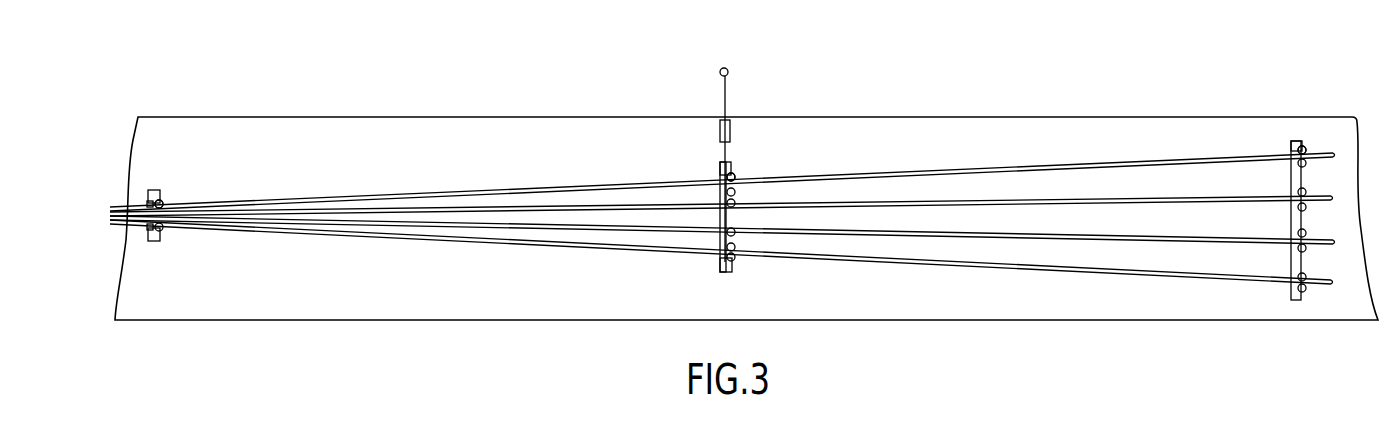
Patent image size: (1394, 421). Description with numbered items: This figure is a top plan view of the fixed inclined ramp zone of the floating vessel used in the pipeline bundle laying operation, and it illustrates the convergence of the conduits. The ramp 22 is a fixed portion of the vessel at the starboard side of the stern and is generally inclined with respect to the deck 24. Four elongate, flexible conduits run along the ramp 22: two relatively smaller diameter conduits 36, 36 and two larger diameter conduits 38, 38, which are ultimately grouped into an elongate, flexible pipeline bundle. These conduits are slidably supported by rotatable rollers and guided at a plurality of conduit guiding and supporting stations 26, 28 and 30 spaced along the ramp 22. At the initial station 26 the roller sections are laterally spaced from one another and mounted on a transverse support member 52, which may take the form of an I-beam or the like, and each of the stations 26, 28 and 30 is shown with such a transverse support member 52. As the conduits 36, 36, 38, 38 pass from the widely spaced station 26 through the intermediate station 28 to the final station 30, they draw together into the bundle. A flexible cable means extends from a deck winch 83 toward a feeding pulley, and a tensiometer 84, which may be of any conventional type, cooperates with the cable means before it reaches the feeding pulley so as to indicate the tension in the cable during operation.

The ramp 22 is at (604, 160).
The deck 24 is at (496, 106).
The conduit guiding and supporting station 26 is at (1313, 140).
The conduit guiding and supporting station 28 is at (770, 164).
The conduit guiding and supporting station 30 is at (168, 188).
The conduit 36 is at (946, 174).
The conduit 38 is at (1110, 203).
The transverse support member 52 is at (158, 190).
The deck winch 83 is at (728, 70).
The tensiometer 84 is at (730, 133).